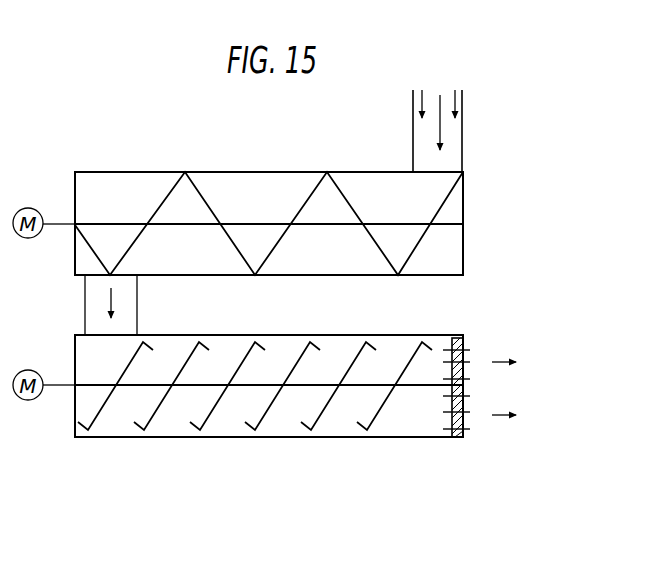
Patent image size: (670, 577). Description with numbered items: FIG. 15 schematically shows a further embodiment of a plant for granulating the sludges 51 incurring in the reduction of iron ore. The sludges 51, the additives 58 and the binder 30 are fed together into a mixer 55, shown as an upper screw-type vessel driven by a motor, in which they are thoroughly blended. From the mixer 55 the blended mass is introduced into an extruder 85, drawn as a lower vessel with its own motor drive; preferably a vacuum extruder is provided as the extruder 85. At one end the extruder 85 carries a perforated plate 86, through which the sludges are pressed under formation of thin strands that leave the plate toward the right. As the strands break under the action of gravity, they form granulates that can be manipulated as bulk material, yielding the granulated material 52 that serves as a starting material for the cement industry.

The mixer 55 is at (264, 178).
The additives 58 is at (422, 90).
The binder 30 is at (455, 90).
The sludges 51 is at (440, 127).
The extruder 85 is at (288, 428).
The perforated plate 86 is at (467, 350).
The granulated material 52 is at (493, 418).